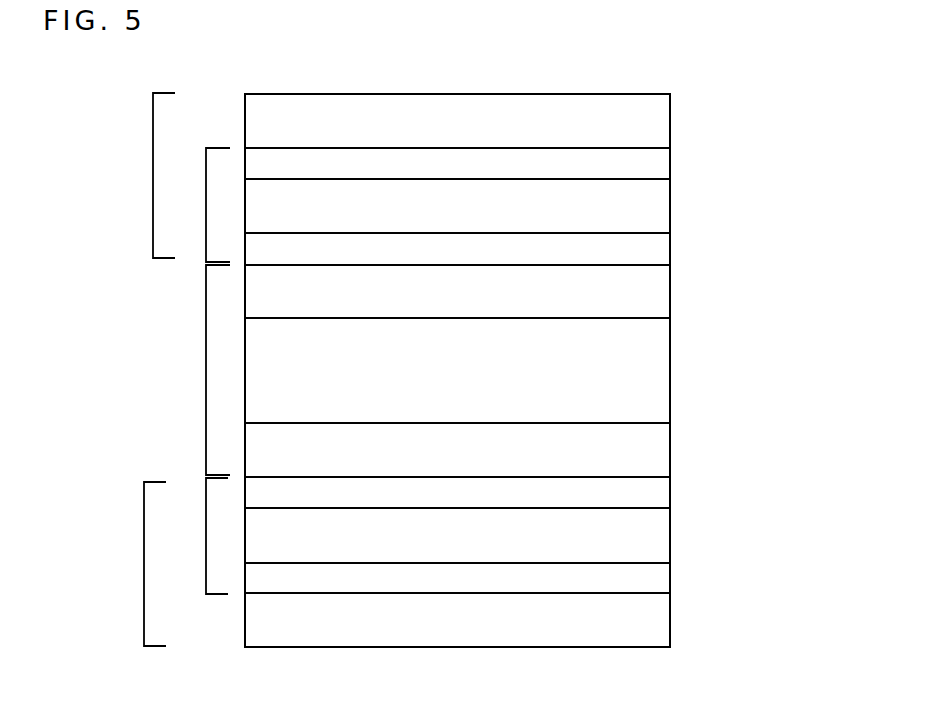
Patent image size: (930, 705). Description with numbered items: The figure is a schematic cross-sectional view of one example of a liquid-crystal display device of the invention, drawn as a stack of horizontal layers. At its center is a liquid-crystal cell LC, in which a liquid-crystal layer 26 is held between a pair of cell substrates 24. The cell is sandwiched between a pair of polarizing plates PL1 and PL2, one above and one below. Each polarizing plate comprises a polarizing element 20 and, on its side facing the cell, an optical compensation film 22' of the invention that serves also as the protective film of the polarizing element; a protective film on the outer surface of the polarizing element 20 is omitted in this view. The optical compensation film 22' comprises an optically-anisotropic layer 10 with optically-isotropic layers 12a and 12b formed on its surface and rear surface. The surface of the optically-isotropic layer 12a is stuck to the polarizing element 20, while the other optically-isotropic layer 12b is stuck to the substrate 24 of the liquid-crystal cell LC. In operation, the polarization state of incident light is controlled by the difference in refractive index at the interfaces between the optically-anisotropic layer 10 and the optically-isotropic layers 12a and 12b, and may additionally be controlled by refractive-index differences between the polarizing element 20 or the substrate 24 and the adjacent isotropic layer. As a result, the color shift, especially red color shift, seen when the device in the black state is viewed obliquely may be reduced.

The optically-anisotropic layer 10 is at (660, 207).
The optically-isotropic layer 12a is at (652, 163).
The optically-isotropic layer 12b is at (650, 253).
The polarizing element 20 is at (648, 128).
The optical compensation film 22' is at (195, 371).
The cell substrate 24 is at (657, 300).
The liquid-crystal layer 26 is at (648, 375).
The polarizing plate PL1 is at (124, 175).
The polarizing plate PL2 is at (121, 564).
The liquid-crystal cell LC is at (191, 370).